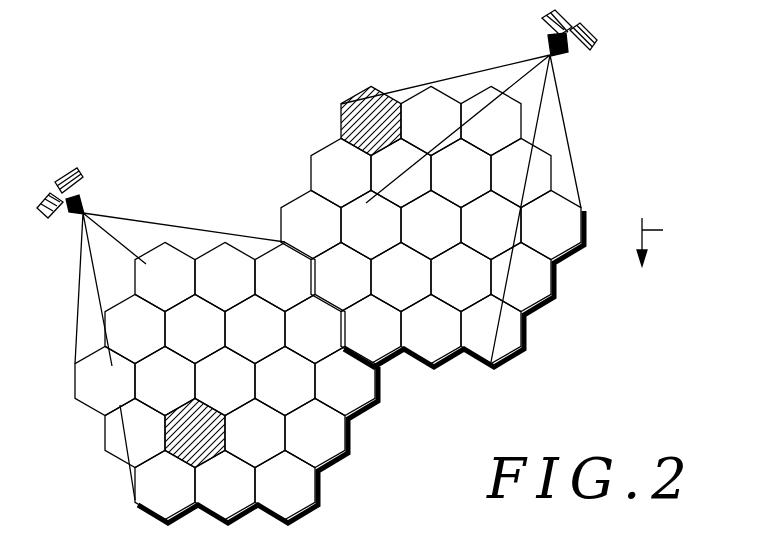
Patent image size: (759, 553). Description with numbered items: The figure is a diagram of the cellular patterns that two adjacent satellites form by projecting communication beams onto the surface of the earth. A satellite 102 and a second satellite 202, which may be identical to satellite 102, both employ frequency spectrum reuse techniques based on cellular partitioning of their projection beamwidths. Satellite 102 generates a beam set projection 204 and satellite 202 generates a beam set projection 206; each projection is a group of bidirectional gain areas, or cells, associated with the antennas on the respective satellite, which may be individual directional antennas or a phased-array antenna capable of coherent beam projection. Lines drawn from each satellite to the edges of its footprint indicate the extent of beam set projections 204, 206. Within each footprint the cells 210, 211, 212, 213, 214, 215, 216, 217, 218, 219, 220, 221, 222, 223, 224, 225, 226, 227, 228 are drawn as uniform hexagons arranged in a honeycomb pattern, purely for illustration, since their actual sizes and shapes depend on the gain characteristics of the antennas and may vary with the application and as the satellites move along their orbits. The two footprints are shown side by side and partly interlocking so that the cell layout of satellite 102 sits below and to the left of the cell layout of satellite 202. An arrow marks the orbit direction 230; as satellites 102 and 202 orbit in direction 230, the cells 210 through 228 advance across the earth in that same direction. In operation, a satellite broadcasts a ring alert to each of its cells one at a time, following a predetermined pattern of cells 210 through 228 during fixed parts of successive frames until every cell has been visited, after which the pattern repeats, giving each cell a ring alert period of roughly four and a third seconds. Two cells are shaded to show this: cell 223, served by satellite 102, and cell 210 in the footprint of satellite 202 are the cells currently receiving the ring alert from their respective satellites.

The satellite 102 is at (65, 176).
The satellite 202 is at (594, 31).
The beam set projection 204 is at (116, 218).
The beam set projection 206 is at (524, 70).
The cell 210 is at (146, 292).
The cell 211 is at (206, 292).
The cell 212 is at (266, 292).
The cell 213 is at (116, 344).
The cell 214 is at (176, 344).
The cell 215 is at (236, 344).
The cell 216 is at (296, 344).
The cell 217 is at (86, 396).
The cell 218 is at (146, 396).
The cell 219 is at (206, 396).
The cell 220 is at (266, 396).
The cell 221 is at (326, 396).
The cell 222 is at (116, 448).
The cell 223 is at (176, 448).
The cell 224 is at (236, 448).
The cell 225 is at (296, 448).
The cell 226 is at (146, 500).
The cell 227 is at (206, 500).
The cell 228 is at (266, 500).
The orbit direction 230 is at (673, 242).